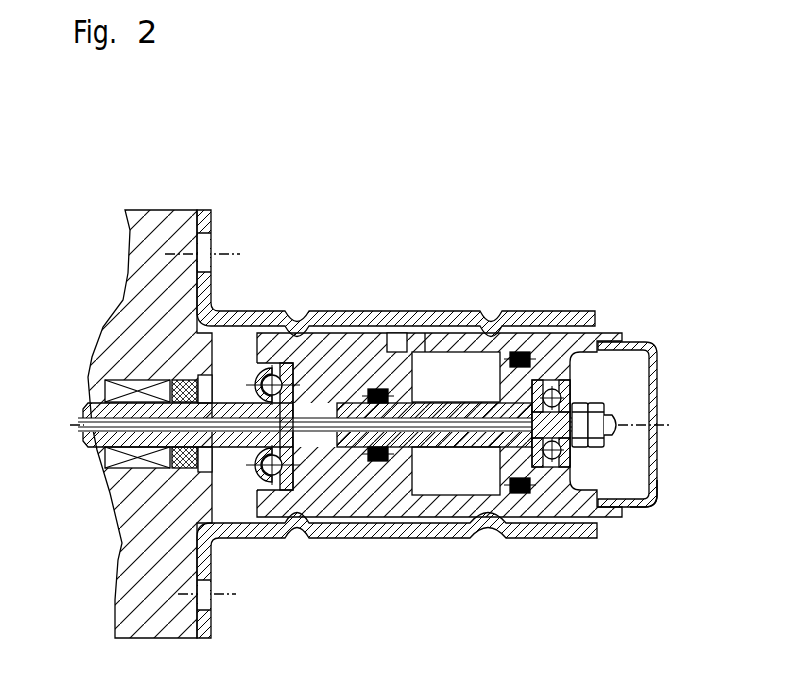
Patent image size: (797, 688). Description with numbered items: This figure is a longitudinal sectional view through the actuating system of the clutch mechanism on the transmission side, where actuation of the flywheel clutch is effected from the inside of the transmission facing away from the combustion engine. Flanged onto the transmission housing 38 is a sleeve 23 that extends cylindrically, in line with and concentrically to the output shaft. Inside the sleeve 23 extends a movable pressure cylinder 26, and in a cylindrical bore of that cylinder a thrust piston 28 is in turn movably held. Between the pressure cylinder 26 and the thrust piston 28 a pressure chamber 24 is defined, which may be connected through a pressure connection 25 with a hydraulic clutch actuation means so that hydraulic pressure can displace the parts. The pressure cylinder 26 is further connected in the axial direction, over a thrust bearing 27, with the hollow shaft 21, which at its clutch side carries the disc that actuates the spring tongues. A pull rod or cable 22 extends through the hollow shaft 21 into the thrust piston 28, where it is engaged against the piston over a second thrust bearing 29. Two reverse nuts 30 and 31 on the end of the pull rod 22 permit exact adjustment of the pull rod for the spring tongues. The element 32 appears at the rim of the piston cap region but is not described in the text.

The hollow shaft 21 is at (234, 409).
The pull rod 22 is at (317, 424).
The sleeve 23 is at (565, 318).
The pressure chamber 24 is at (468, 378).
The pressure connection 25 is at (400, 347).
The pressure cylinder 26 is at (357, 355).
The thrust bearing 27 is at (270, 383).
The thrust piston 28 is at (657, 360).
The thrust bearing 29 is at (547, 447).
The reverse nut 30 is at (580, 446).
The reverse nut 31 is at (600, 446).
The cap rim 32 is at (657, 490).
The transmission housing 38 is at (157, 530).